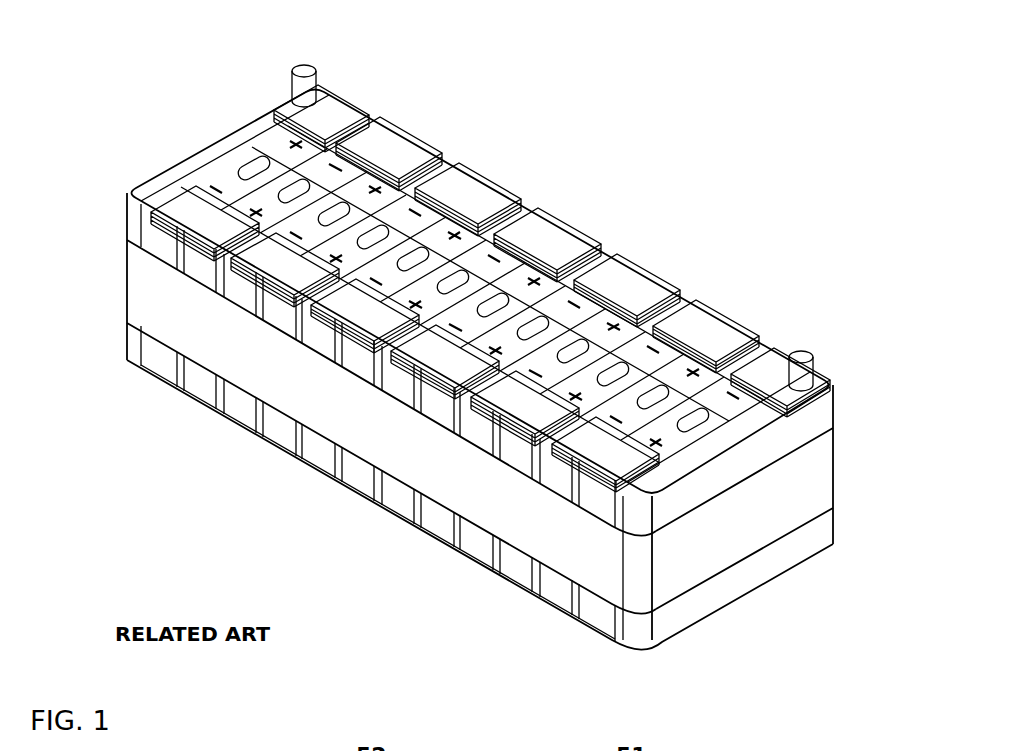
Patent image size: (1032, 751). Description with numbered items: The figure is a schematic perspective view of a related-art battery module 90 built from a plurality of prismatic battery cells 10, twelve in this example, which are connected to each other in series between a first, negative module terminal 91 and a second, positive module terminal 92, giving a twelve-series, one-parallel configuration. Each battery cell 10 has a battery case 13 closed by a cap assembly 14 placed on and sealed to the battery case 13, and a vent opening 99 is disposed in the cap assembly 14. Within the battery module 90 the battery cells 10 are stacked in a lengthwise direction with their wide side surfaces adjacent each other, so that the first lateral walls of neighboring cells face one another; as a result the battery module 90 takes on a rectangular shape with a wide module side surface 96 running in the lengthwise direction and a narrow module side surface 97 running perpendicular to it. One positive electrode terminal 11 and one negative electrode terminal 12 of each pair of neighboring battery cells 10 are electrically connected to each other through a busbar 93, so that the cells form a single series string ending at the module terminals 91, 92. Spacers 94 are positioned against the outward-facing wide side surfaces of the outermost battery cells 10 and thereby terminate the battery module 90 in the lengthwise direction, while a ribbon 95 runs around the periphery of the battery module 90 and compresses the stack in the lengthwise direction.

The prismatic battery cell 10 is at (160, 360).
The positive electrode terminal 11 is at (371, 116).
The negative electrode terminal 12 is at (392, 155).
The battery case 13 is at (565, 577).
The cap assembly 14 is at (283, 140).
The battery module 90 is at (713, 141).
The first module terminal 91 is at (801, 380).
The second module terminal 92 is at (308, 92).
The busbar 93 is at (497, 205).
The spacer 94 is at (150, 200).
The ribbon 95 is at (456, 470).
The wide module side surface 96 is at (329, 395).
The narrow module side surface 97 is at (745, 520).
The vent opening 99 is at (256, 165).